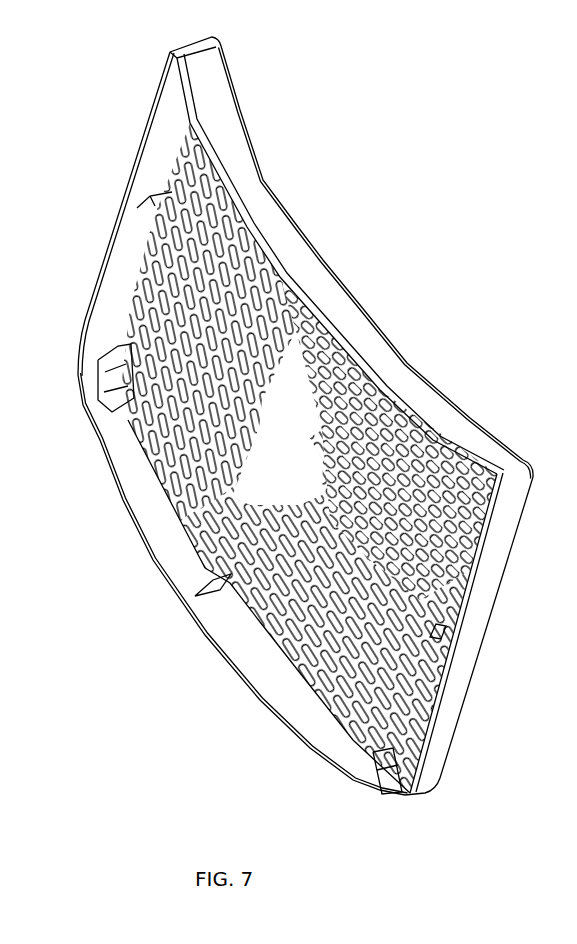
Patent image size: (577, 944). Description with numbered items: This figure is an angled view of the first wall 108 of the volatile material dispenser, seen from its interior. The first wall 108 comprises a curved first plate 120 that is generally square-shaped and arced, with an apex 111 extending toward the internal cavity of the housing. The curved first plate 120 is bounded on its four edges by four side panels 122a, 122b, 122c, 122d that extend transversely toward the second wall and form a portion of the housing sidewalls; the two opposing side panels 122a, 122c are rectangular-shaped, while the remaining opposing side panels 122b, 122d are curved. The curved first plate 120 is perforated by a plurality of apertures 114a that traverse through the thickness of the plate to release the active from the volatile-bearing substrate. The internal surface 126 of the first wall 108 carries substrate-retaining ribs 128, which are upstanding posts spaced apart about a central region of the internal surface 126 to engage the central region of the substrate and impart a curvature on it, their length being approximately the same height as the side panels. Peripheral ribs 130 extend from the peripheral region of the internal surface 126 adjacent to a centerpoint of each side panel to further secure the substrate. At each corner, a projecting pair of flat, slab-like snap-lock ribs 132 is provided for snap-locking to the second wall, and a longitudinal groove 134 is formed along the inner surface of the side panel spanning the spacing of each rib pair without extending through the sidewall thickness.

The first wall 108 is at (213, 53).
The apex 111 is at (346, 253).
The apertures 114a is at (403, 610).
The curved first plate 120 is at (210, 550).
The side panel 122a is at (448, 697).
The side panel 122b is at (353, 330).
The side panel 122c is at (158, 123).
The side panel 122d is at (132, 500).
The internal surface 126 is at (262, 620).
The substrate-retaining rib 128 is at (205, 452).
The peripheral rib 130 is at (160, 192).
The snap-lock rib 132 is at (115, 352).
The longitudinal groove 134 is at (103, 388).